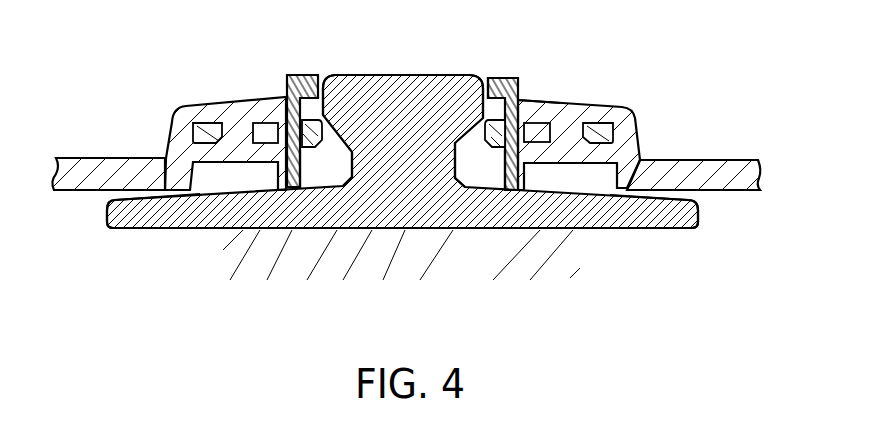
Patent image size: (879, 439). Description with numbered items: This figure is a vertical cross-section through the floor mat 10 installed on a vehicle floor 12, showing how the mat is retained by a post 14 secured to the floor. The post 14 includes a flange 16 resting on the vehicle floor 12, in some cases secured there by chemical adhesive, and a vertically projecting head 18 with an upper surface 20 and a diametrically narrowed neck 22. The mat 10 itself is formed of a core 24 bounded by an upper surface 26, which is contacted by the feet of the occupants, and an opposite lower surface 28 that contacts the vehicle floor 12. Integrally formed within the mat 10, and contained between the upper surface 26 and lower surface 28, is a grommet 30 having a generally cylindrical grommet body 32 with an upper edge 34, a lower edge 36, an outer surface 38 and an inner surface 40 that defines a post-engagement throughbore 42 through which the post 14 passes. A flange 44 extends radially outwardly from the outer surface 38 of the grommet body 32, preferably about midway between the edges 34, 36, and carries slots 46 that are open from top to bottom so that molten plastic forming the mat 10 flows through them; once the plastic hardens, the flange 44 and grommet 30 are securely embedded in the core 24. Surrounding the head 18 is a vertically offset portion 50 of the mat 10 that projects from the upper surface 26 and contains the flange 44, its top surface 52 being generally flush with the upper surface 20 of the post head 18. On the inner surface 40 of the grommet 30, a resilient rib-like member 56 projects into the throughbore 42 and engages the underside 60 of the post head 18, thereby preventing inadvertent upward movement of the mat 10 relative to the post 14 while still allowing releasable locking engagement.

The floor mat 10 is at (680, 137).
The vehicle floor 12 is at (238, 255).
The post 14 is at (155, 217).
The flange 16 is at (693, 218).
The head 18 is at (412, 92).
The upper surface 20 is at (362, 74).
The neck 22 is at (370, 152).
The core 24 is at (755, 180).
The upper surface 26 is at (740, 172).
The lower surface 28 is at (743, 192).
The grommet 30 is at (519, 78).
The grommet body 32 is at (517, 172).
The upper edge 34 is at (497, 79).
The lower edge 36 is at (293, 192).
The outer surface 38 is at (517, 110).
The inner surface 40 is at (514, 190).
The post-engagement throughbore 42 is at (330, 125).
The flange 44 is at (207, 133).
The slots 46 is at (563, 147).
The vertically offset portion 50 is at (247, 100).
The top surface 52 is at (623, 110).
The rib-like member 56 is at (493, 138).
The underside 60 is at (322, 146).